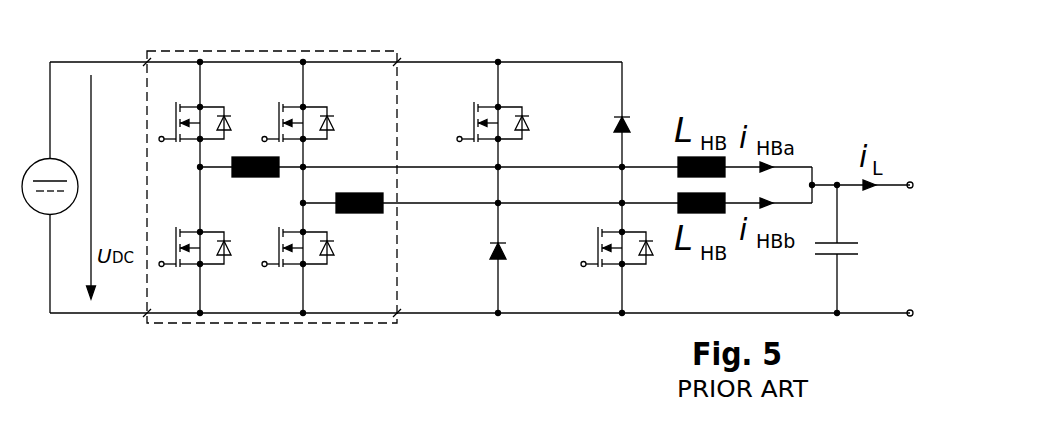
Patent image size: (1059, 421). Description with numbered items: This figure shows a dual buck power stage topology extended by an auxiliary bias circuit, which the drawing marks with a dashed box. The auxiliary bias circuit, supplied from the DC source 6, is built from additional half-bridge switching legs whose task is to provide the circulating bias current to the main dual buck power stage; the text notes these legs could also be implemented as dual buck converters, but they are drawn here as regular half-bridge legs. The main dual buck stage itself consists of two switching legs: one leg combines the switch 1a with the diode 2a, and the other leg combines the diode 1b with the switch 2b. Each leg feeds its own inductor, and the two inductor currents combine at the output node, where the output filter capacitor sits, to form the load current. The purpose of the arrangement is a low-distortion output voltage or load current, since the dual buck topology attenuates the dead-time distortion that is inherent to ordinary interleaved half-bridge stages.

The DC voltage source 6 is at (47, 169).
The switch S1a 1a is at (465, 122).
The diode D1b 1b is at (589, 125).
The diode D2a 2a is at (466, 249).
The switch S2b 2b is at (590, 249).